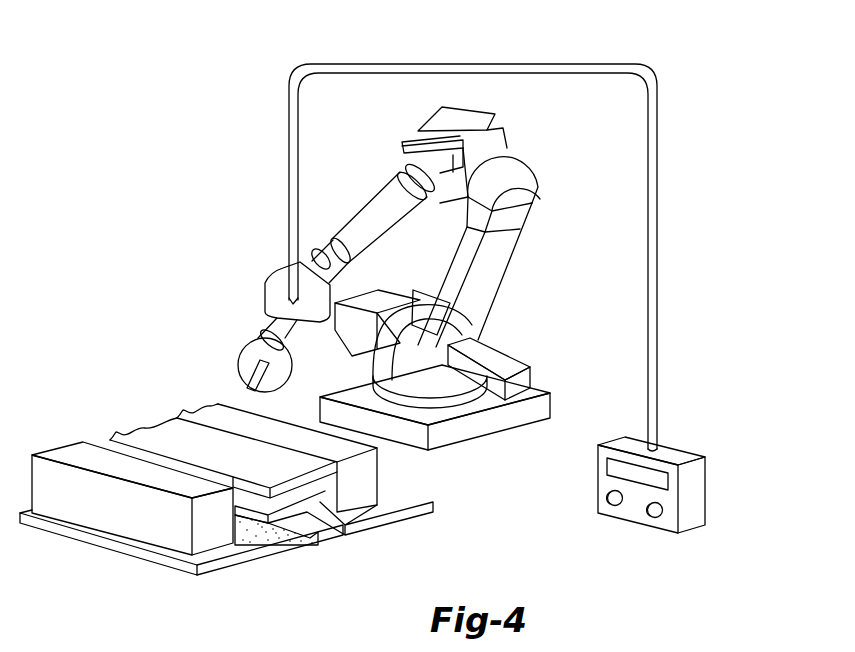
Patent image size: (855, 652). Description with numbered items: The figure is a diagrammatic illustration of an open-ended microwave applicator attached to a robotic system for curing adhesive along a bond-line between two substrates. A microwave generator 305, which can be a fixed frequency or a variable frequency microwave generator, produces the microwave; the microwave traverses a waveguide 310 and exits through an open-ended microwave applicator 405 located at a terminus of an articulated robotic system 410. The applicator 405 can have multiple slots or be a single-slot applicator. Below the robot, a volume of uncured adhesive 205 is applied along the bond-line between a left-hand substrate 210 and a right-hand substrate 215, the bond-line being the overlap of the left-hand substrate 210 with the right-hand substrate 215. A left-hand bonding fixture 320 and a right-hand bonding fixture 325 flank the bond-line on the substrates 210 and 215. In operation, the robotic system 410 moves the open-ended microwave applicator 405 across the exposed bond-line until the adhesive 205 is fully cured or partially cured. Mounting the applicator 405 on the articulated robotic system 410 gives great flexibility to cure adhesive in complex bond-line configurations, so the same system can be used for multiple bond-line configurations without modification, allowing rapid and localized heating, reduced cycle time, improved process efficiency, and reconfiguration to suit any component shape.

The uncured adhesive 205 is at (282, 530).
The left-hand substrate 210 is at (152, 555).
The right-hand substrate 215 is at (397, 518).
The microwave generator 305 is at (690, 488).
The waveguide 310 is at (387, 67).
The left-hand bonding fixture 320 is at (53, 455).
The right-hand bonding fixture 325 is at (360, 470).
The open-ended microwave applicator 405 is at (250, 357).
The articulated robotic system 410 is at (528, 184).